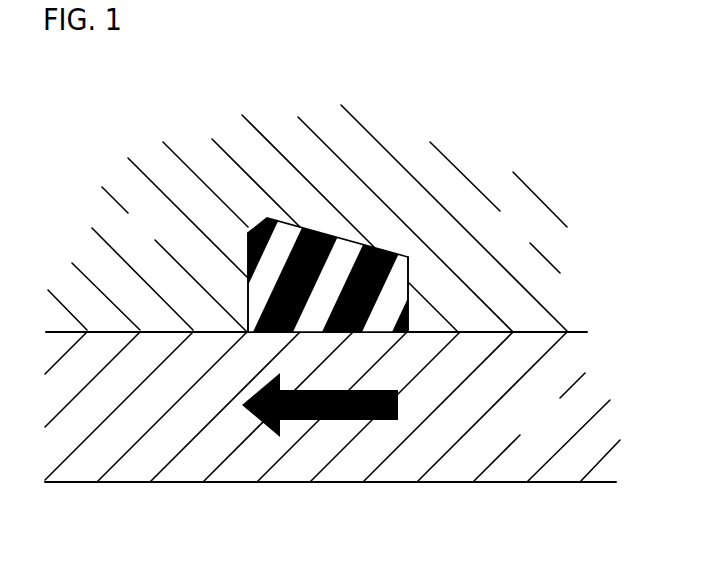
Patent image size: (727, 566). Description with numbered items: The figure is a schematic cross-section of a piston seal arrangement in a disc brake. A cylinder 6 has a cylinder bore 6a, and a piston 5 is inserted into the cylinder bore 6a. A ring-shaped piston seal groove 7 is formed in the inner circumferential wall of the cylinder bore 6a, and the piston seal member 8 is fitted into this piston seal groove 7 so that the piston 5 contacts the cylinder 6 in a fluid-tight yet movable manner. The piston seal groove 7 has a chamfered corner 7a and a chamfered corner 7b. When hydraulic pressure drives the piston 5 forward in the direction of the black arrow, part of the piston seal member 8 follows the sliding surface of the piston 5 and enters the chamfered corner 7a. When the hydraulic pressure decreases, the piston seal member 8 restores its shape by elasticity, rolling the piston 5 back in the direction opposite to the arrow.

The piston 5 is at (300, 443).
The cylinder 6 is at (158, 226).
The cylinder bore 6a is at (477, 332).
The piston seal groove 7 is at (336, 332).
The chamfered corner 7a is at (246, 312).
The chamfered corner 7b is at (409, 316).
The piston seal member 8 is at (398, 292).